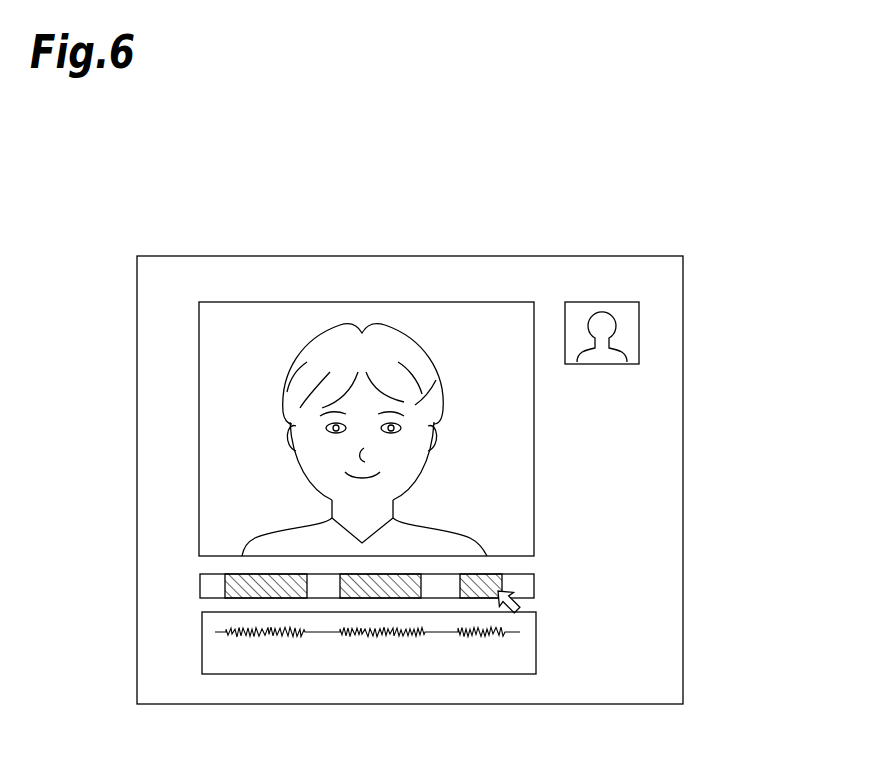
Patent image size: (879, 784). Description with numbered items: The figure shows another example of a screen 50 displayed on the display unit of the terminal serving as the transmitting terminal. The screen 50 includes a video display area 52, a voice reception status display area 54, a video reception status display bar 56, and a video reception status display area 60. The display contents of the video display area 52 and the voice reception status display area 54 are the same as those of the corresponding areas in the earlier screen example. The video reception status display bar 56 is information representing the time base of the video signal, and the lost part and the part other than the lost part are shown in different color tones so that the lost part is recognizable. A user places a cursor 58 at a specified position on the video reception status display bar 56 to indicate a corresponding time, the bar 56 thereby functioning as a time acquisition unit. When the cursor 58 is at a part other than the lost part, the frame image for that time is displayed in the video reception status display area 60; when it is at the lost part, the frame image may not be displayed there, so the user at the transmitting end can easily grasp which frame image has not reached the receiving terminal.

The screen 50 is at (543, 256).
The video display area 52 is at (448, 302).
The voice reception status display area 54 is at (430, 675).
The video reception status display bar 56 is at (200, 585).
The cursor 58 is at (525, 604).
The video reception status display area 60 is at (639, 333).